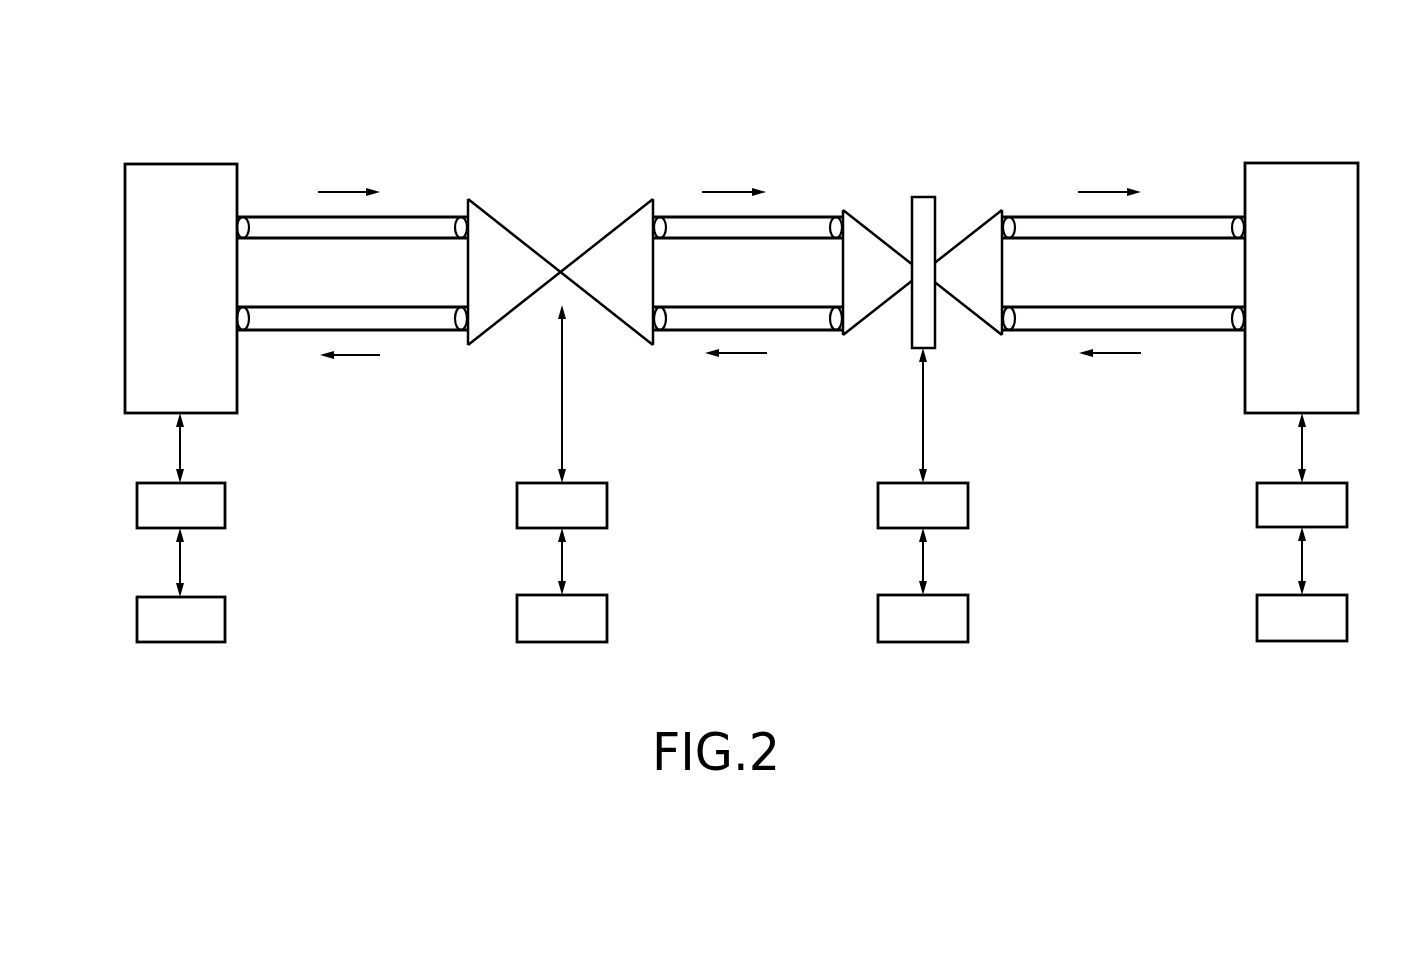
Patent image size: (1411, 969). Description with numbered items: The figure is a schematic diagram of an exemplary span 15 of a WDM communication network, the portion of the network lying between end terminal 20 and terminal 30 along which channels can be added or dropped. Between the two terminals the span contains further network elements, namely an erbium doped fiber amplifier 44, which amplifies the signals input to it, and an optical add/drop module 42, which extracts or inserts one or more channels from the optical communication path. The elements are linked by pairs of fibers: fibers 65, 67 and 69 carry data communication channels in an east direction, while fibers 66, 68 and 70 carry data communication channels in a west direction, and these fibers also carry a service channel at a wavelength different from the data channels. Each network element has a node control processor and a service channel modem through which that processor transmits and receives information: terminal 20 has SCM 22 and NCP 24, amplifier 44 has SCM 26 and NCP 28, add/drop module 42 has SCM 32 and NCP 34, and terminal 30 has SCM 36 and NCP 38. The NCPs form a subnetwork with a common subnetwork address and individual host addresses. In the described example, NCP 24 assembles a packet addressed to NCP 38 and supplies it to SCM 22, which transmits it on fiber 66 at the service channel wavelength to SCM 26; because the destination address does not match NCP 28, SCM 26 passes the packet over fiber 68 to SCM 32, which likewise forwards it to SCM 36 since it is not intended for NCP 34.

The span 15 is at (1103, 122).
The terminal 20 is at (150, 164).
The terminal 30 is at (1331, 163).
The service channel modem 22 is at (137, 498).
The node control processor 24 is at (137, 612).
The service channel modem 26 is at (517, 495).
The node control processor 28 is at (517, 615).
The service channel modem 32 is at (878, 510).
The node control processor 34 is at (878, 601).
The service channel modem 36 is at (1257, 511).
The node control processor 38 is at (1257, 621).
The optical add/drop module 42 is at (926, 197).
The erbium doped fiber amplifier 44 is at (622, 225).
The fiber 65 is at (436, 216).
The fiber 66 is at (433, 331).
The fiber 67 is at (803, 216).
The fiber 68 is at (681, 331).
The fiber 69 is at (1181, 216).
The fiber 70 is at (1190, 331).